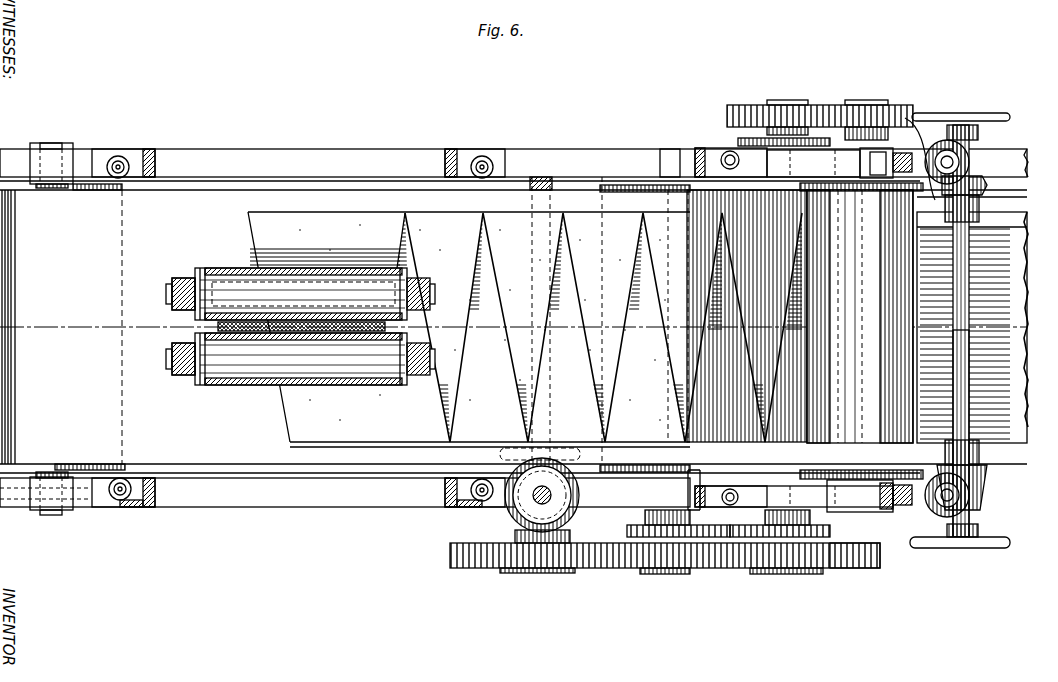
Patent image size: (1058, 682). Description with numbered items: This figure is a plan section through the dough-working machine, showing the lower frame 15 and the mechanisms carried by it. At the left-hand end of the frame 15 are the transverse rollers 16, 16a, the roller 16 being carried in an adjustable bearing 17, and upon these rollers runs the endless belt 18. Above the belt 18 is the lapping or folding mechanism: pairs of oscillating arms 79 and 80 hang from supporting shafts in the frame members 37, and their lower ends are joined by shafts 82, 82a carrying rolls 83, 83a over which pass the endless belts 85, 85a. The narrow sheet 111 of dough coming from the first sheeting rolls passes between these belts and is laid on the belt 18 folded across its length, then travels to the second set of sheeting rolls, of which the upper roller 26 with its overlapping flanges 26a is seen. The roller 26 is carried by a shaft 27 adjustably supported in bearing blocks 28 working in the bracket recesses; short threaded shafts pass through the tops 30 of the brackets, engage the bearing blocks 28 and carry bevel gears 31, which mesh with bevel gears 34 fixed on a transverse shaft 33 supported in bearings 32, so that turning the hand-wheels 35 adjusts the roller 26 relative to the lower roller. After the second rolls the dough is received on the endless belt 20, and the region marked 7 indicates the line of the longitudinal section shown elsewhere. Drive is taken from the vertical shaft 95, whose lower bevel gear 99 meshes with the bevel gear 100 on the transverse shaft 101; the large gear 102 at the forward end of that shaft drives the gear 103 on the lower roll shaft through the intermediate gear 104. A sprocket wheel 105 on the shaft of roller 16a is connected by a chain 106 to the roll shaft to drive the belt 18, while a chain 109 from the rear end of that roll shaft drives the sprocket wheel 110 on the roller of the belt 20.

The box 7 is at (972, 327).
The lower frame 15 is at (272, 163).
The transverse roller 16 is at (92, 186).
The transverse roller 16a is at (620, 185).
The adjustable bearing 17 is at (66, 145).
The endless belt 18 is at (62, 327).
The endless belt 20 is at (993, 457).
The roller 26 is at (800, 316).
The flanges 26a is at (866, 191).
The shaft 27 is at (870, 150).
The bearing blocks 28 is at (896, 150).
The tops of the brackets 30 is at (915, 160).
The bevel gears 31 is at (945, 140).
The bearings 32 is at (972, 172).
The transverse shaft 33 is at (970, 423).
The bevel gears 34 is at (988, 186).
The hand-wheels 35 is at (990, 113).
The frame members 37 is at (150, 149).
The oscillating arms 79 is at (420, 278).
The oscillating arms 80 is at (178, 278).
The shaft 82 is at (170, 298).
The shaft 82a is at (170, 356).
The roll 83 is at (212, 280).
The roll 83a is at (210, 385).
The endless belt 85 is at (305, 282).
The endless belt 85a is at (262, 371).
The vertical shaft 95 is at (552, 494).
The bevel gear 99 is at (510, 512).
The bevel gear 100 is at (500, 454).
The transverse shaft 101 is at (543, 178).
The large gear 102 is at (490, 568).
The gear 103 is at (850, 568).
The intermediate gear 104 is at (670, 575).
The sprocket wheel 105 is at (650, 540).
The chain 106 is at (732, 538).
The chain 109 is at (812, 138).
The sprocket wheel 110 is at (740, 140).
The narrow sheet 111 is at (216, 326).